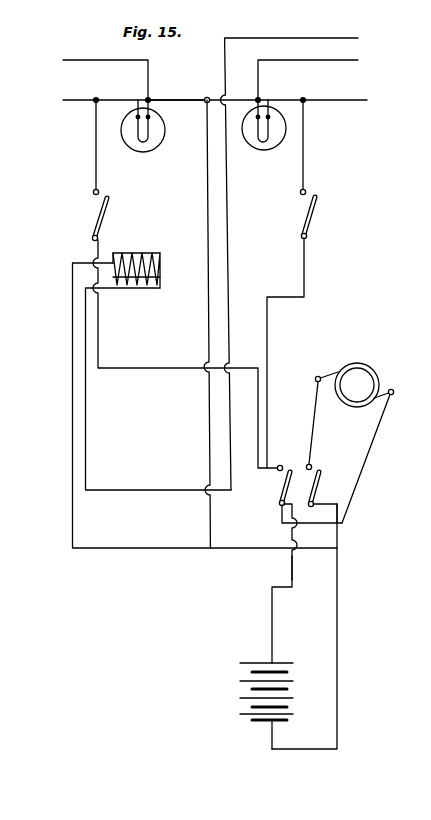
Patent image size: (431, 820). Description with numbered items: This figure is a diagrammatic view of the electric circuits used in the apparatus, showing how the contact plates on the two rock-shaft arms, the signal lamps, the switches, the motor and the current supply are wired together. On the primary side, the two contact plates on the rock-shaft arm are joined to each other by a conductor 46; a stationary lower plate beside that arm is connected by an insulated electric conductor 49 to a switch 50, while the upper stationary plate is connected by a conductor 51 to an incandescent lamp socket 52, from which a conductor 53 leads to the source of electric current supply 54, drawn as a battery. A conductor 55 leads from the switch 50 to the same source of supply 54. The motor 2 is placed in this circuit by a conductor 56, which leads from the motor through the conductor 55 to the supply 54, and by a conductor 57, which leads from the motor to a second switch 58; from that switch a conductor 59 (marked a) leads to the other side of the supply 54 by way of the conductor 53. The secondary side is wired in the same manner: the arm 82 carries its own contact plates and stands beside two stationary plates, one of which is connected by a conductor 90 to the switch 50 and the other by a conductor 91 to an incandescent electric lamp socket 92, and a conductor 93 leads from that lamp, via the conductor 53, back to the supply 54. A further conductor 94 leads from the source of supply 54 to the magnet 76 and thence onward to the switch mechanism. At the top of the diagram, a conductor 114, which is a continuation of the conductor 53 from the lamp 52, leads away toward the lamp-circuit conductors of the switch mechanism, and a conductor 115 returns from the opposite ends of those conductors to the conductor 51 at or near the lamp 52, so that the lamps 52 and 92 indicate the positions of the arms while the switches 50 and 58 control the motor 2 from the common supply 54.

The motor 2 is at (368, 378).
The conductor 46 is at (313, 220).
The insulated electric conductor 49 is at (306, 263).
The switch 50 is at (286, 486).
The conductor 51 is at (305, 158).
The incandescent lamp socket 52 is at (280, 120).
The conductor 53 is at (238, 100).
The source of electric current supply 54 is at (290, 692).
The conductor 55 is at (294, 570).
The conductor 56 is at (369, 450).
The conductor 57 is at (312, 423).
The switch 58 is at (316, 483).
The conductor 59 is at (342, 537).
The solenoid coil 76 is at (152, 253).
The arm 82 is at (106, 220).
The conductor 90 is at (100, 335).
The conductor 91 is at (98, 162).
The incandescent electric lamp socket 92 is at (160, 141).
The conductor 93 is at (177, 101).
The conductor 94 is at (262, 38).
The conductor 114 is at (121, 61).
The conductor 115 is at (74, 100).